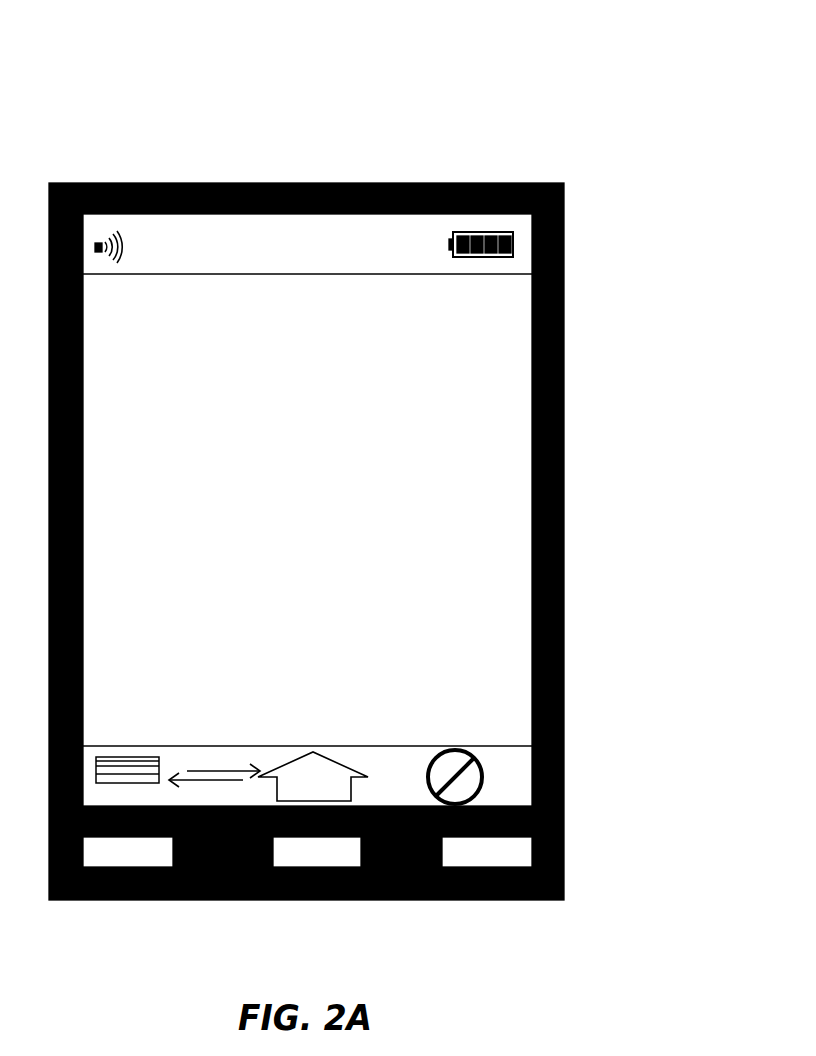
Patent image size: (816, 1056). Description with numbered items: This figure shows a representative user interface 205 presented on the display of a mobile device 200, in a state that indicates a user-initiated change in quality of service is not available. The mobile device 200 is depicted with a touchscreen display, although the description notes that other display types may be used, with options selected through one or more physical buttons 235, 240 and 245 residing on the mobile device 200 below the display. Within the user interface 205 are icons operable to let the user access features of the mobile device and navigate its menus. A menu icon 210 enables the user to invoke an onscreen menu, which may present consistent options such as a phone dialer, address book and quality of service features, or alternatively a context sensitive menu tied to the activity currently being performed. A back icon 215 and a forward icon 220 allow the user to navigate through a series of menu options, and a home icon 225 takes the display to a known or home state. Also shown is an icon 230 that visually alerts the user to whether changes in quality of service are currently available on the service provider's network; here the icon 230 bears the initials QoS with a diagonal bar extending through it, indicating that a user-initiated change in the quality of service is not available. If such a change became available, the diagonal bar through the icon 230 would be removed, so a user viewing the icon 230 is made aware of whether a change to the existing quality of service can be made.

The mobile device 200 is at (580, 117).
The user interface 205 is at (508, 331).
The menu icon 210 is at (118, 750).
The back icon 215 is at (177, 766).
The forward icon 220 is at (238, 744).
The home icon 225 is at (345, 759).
The icon 230 is at (456, 741).
The button 235 is at (109, 851).
The button 240 is at (306, 852).
The button 245 is at (469, 852).